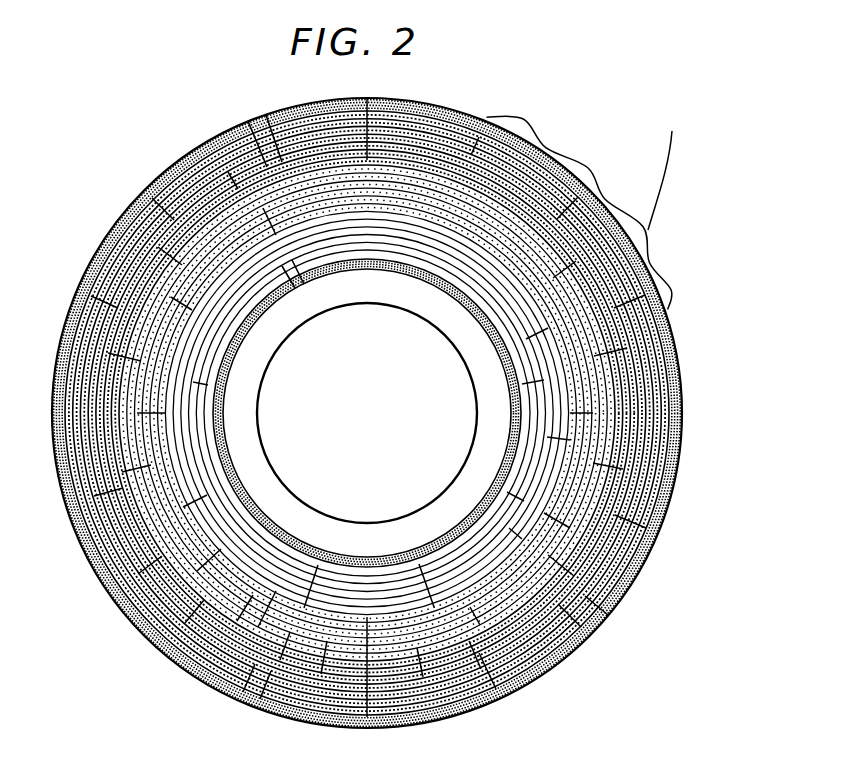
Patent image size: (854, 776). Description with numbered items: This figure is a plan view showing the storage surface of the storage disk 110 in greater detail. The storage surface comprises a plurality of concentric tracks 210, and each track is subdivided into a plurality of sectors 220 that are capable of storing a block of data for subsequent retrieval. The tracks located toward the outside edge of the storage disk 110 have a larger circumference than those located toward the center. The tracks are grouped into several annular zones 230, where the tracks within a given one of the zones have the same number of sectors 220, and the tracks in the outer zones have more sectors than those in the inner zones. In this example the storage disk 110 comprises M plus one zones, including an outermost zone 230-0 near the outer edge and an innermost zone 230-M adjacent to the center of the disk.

The storage disk 110 is at (78, 133).
The concentric tracks 210 is at (575, 640).
The sectors 220 is at (672, 131).
The annular zones 230 is at (733, 372).
The outermost zone 230-0 is at (268, 131).
The innermost zone 230-M is at (297, 263).